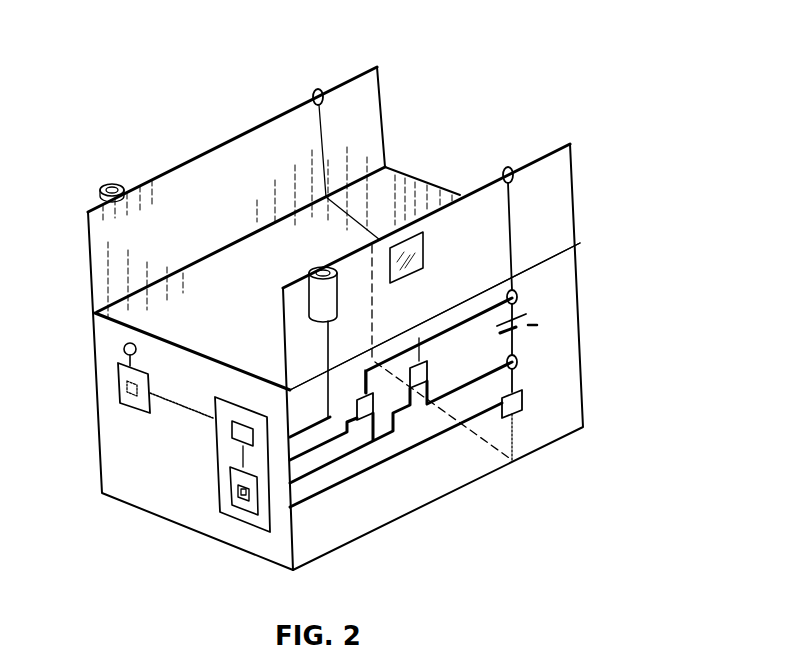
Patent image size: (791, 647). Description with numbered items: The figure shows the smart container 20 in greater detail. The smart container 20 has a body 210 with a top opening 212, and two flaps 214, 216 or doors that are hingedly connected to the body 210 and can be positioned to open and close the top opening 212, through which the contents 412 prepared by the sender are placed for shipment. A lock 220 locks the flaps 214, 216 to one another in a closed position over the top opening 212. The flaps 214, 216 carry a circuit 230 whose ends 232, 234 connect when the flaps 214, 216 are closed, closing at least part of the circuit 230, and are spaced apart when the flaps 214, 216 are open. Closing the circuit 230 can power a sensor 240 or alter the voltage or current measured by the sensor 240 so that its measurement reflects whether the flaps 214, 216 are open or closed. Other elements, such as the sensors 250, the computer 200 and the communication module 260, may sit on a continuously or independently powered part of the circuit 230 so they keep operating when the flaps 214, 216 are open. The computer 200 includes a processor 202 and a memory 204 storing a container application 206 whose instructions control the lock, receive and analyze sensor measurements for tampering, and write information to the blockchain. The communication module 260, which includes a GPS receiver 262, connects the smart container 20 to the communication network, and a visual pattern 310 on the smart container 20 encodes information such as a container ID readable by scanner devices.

The smart container 20 is at (547, 58).
The computer 200 is at (211, 500).
The processor 202 is at (231, 429).
The memory 204 is at (233, 508).
The container application 206 is at (239, 489).
The body 210 is at (581, 288).
The top opening 212 is at (402, 190).
The flap 214 is at (261, 120).
The flap 216 is at (536, 157).
The lock 220 is at (106, 170).
The circuit 230 is at (526, 209).
The end of circuit 232 is at (314, 90).
The end of circuit 234 is at (506, 167).
The sensor 240 is at (524, 400).
The sensor 250 is at (369, 366).
The communication module 260 is at (115, 386).
The GPS receiver 262 is at (124, 392).
The visual pattern 310 is at (432, 246).
The contents 412 is at (258, 266).